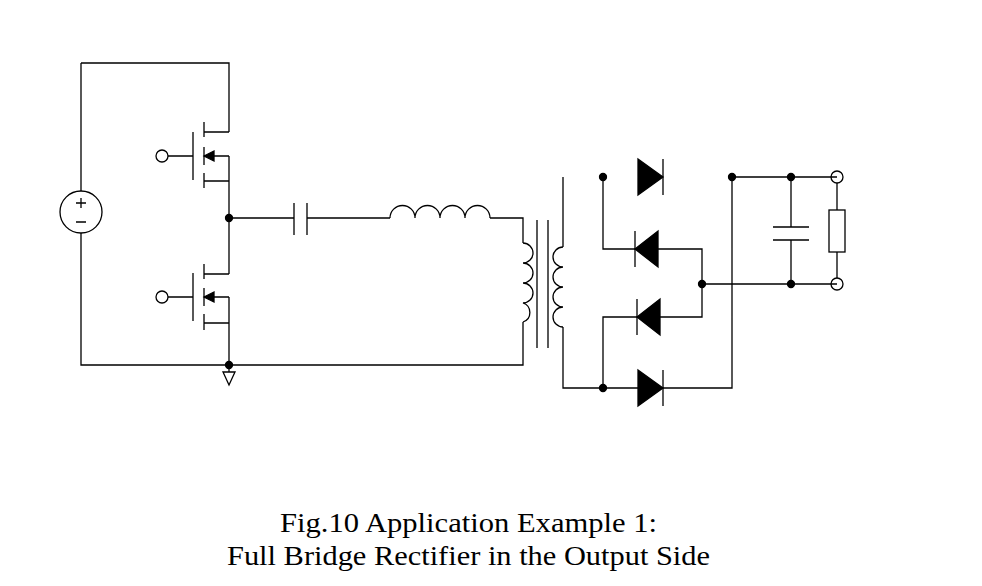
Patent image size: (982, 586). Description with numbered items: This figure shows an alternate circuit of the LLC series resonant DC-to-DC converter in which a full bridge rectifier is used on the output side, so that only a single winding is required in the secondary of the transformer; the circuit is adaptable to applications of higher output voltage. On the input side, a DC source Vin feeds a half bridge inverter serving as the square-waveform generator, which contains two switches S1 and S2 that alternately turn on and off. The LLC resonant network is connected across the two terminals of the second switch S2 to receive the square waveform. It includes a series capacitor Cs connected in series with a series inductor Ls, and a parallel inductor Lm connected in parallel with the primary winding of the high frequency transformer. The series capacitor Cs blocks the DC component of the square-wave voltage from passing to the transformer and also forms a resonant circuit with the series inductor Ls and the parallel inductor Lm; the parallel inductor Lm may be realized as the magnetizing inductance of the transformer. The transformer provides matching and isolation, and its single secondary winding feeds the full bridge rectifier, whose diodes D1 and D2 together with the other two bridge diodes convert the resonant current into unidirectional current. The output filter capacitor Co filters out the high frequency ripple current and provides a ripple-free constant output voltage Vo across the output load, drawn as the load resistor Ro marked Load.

The input voltage source Vin is at (81, 125).
The first switch S1 is at (192, 136).
The second switch S2 is at (192, 284).
The series capacitor Cs is at (308, 196).
The series inductor Ls is at (440, 187).
The parallel inductor Lm is at (519, 284).
The diode D1 is at (674, 190).
The diode D2 is at (673, 411).
The output voltage Vo is at (820, 162).
The capacitor Co is at (791, 281).
The load resistor Ro is at (852, 259).
The load Load is at (847, 203).